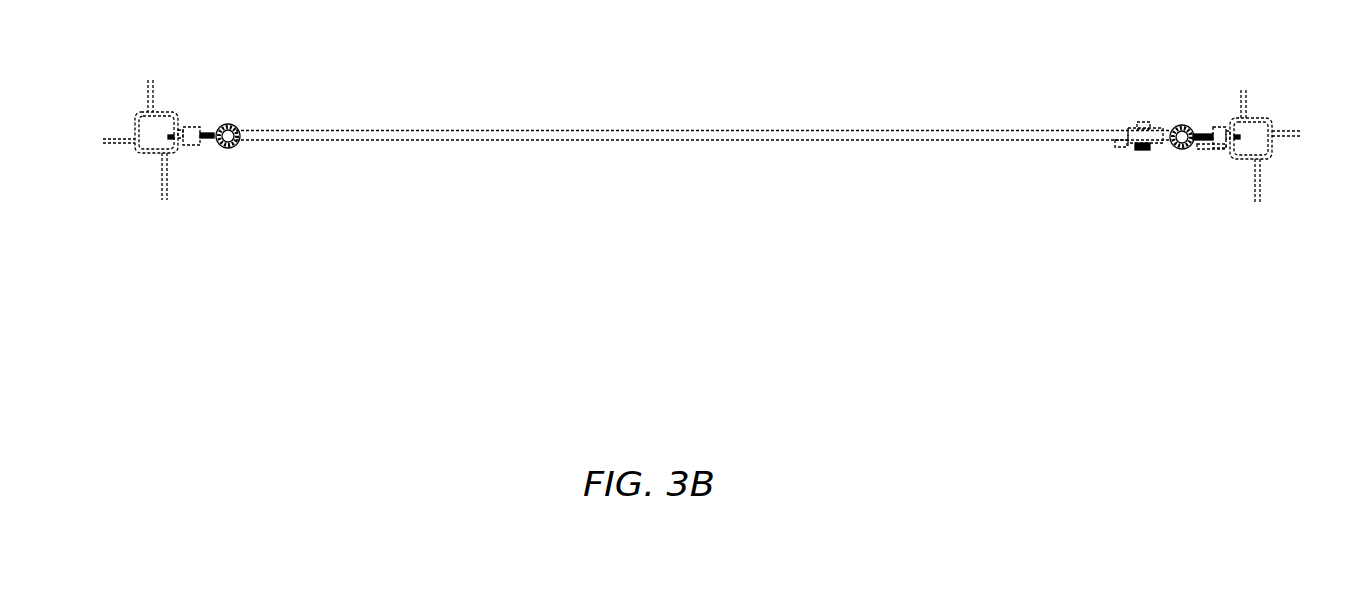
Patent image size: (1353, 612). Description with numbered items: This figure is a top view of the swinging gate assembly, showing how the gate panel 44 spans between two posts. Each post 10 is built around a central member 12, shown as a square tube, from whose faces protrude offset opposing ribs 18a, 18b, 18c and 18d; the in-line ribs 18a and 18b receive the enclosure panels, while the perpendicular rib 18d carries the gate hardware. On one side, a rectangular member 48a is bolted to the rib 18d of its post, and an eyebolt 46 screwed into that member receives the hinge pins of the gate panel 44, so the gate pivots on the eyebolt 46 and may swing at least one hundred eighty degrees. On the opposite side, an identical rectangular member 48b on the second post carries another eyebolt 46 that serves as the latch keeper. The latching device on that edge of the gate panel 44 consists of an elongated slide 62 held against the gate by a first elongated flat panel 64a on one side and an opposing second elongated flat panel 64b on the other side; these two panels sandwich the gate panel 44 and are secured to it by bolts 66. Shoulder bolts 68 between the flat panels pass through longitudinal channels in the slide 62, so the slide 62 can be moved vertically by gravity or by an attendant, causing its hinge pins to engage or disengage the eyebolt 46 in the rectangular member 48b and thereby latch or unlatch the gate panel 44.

The post 10 is at (140, 169).
The central member 12 is at (156, 111).
The rib 18a is at (150, 80).
The rib 18b is at (163, 200).
The rib 18c is at (123, 138).
The rib 18d is at (202, 126).
The gate panel 44 is at (752, 130).
The eyebolt 46 is at (236, 130).
The rectangular member 48a is at (193, 146).
The rectangular member 48b is at (1215, 127).
The slide 62 is at (1160, 143).
The first elongated flat panel 64a is at (1112, 147).
The second elongated flat panel 64b is at (1115, 127).
The bolt 66 is at (1125, 147).
The shoulder bolt 68 is at (1143, 150).